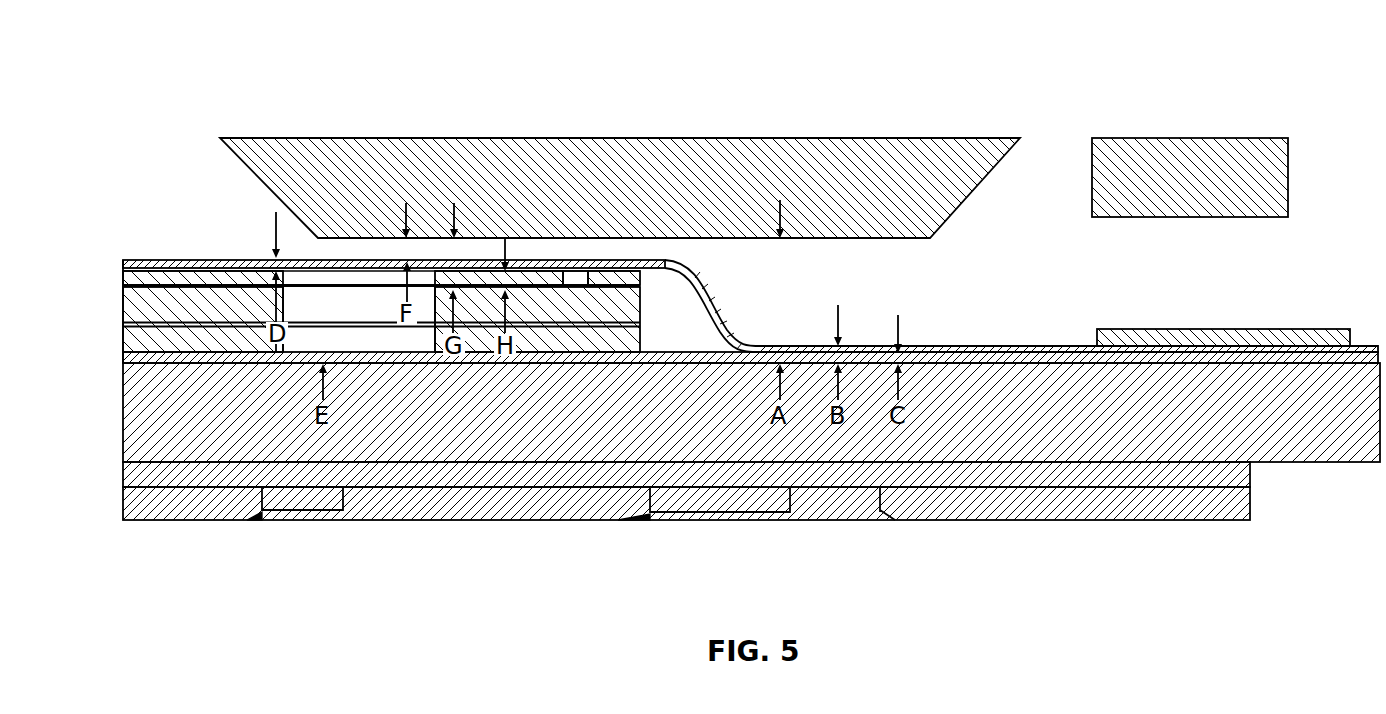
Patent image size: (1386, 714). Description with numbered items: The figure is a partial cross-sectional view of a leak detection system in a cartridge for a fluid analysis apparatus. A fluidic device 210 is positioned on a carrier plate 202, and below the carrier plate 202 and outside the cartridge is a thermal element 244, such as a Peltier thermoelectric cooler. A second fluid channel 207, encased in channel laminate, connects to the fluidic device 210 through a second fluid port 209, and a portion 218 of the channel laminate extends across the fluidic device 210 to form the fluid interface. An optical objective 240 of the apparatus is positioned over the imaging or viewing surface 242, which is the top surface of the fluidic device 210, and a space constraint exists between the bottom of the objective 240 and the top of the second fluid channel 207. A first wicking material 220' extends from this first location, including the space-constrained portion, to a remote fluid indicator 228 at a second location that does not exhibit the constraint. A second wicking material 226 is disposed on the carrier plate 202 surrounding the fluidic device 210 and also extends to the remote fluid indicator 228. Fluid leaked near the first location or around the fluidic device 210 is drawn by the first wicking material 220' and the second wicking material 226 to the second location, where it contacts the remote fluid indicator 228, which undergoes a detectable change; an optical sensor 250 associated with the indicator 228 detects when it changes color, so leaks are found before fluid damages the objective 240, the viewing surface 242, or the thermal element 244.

The carrier plate 202 is at (700, 445).
The second fluid channel 207 is at (319, 276).
The second fluid port 209 is at (347, 290).
The fluidic device 210 is at (303, 303).
The portion of the channel laminate 218 is at (515, 282).
The first wicking material 220' is at (750, 306).
The second wicking material 226 is at (905, 358).
The remote fluid indicator 228 is at (1160, 335).
The optical objective 240 is at (493, 170).
The imaging or viewing surface 242 is at (463, 287).
The thermal element 244 is at (1080, 475).
The optical sensor 250 is at (1206, 129).